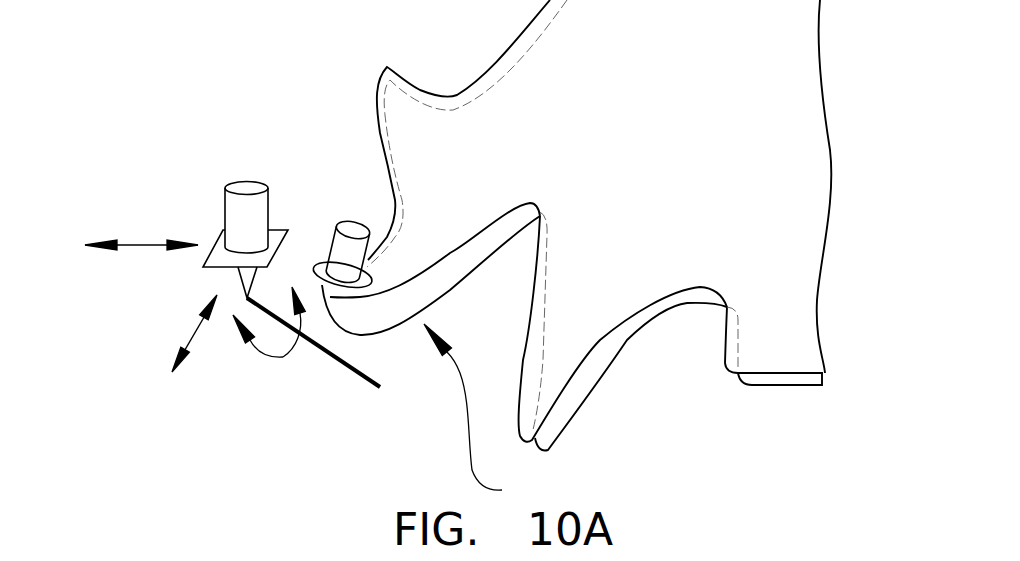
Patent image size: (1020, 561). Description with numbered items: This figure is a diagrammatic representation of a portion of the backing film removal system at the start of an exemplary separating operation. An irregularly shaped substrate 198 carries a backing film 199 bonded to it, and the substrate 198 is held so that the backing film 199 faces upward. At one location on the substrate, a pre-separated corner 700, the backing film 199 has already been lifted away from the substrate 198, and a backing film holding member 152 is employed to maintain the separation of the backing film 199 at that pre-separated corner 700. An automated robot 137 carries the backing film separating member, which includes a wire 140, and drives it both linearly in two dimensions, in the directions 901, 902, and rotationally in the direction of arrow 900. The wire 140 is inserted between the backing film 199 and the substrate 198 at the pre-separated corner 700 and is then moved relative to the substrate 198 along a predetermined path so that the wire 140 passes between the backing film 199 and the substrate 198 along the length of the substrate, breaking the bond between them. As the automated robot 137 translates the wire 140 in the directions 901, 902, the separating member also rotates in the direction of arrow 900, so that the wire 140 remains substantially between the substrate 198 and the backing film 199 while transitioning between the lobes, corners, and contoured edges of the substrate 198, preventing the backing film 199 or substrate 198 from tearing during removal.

The backing film 199 is at (387, 67).
The substrate 198 is at (613, 363).
The automated robot 137 is at (247, 186).
The wire 140 is at (347, 373).
The backing film holding member 152 is at (357, 223).
The direction 901 is at (143, 245).
The direction 902 is at (194, 333).
The arrow 900 is at (283, 357).
The pre-separated corner 700 is at (485, 414).